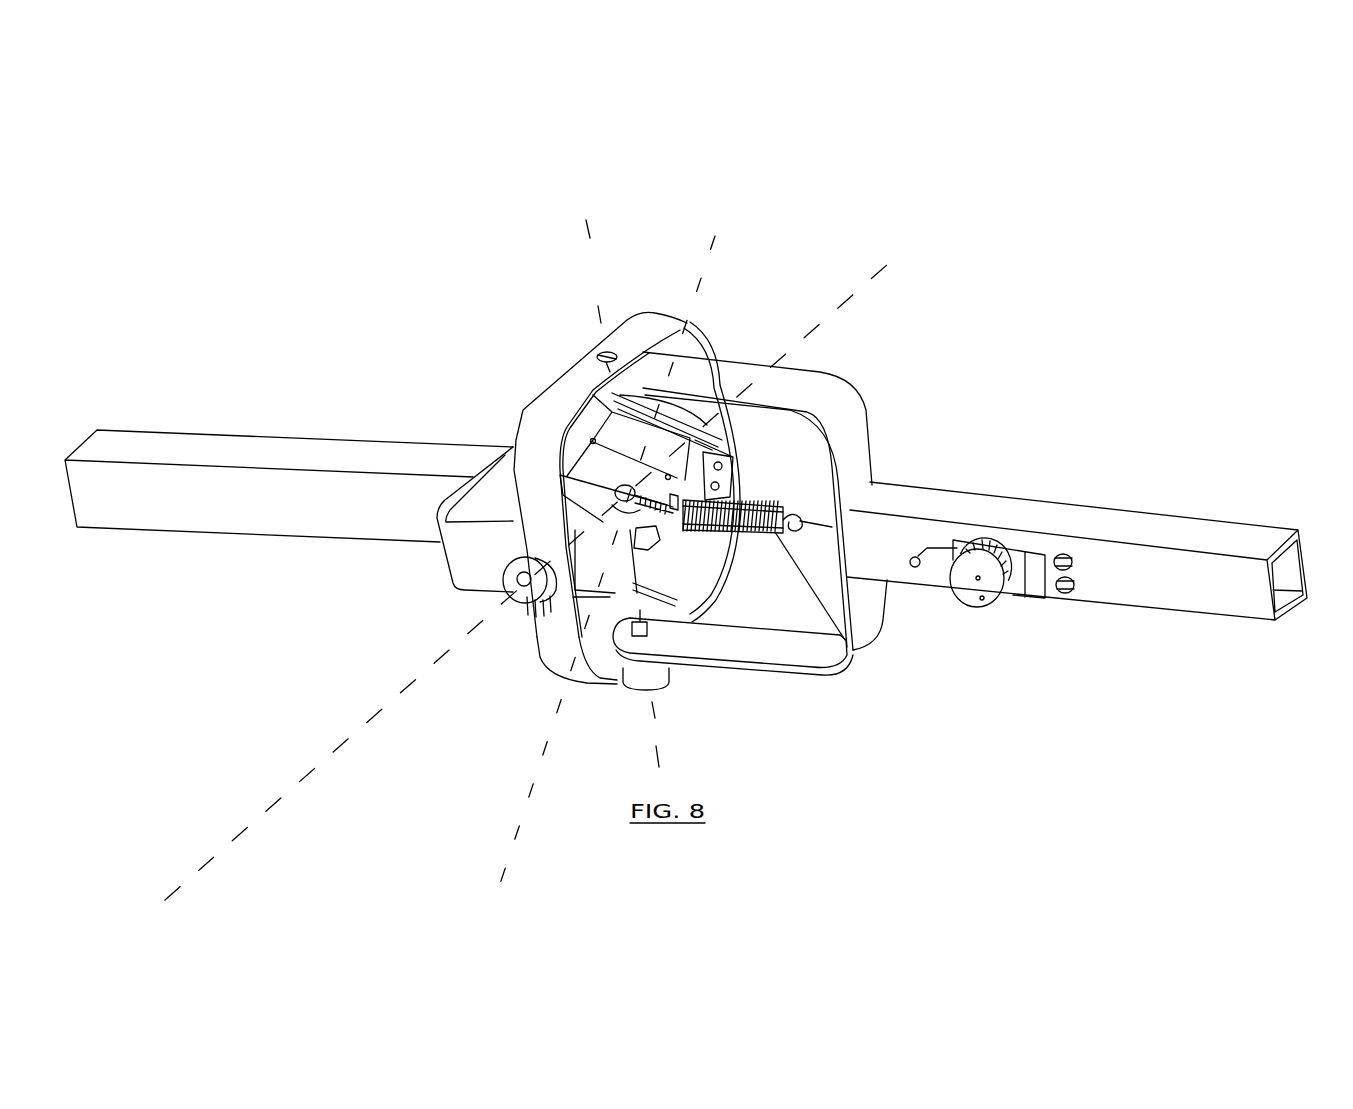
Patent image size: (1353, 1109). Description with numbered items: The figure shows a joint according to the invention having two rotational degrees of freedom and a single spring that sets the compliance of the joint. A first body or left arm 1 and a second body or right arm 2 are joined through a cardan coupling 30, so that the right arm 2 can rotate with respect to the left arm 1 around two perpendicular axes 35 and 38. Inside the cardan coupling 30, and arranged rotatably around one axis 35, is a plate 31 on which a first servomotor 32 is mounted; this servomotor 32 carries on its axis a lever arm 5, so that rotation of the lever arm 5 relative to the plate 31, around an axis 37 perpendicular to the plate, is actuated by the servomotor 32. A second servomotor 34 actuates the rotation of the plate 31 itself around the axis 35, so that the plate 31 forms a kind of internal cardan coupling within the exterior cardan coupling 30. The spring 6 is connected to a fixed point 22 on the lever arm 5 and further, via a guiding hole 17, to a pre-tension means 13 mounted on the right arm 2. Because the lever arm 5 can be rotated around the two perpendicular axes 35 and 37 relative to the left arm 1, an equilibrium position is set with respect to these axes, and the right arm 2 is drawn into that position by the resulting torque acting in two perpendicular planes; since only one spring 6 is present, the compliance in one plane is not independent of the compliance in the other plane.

The first body 1 is at (182, 441).
The second body 2 is at (1150, 523).
The lever arm 5 is at (590, 463).
The spring 6 is at (850, 648).
The pre-tension means 13 is at (993, 585).
The guiding hole 17 is at (922, 550).
The fixed point 22 is at (678, 532).
The cardan coupling 30 is at (713, 328).
The plate 31 is at (617, 527).
The servomotor 32 is at (688, 470).
The second servomotor 34 is at (717, 443).
The axis 35 is at (907, 247).
The axis 37 is at (730, 182).
The axis 38 is at (597, 285).